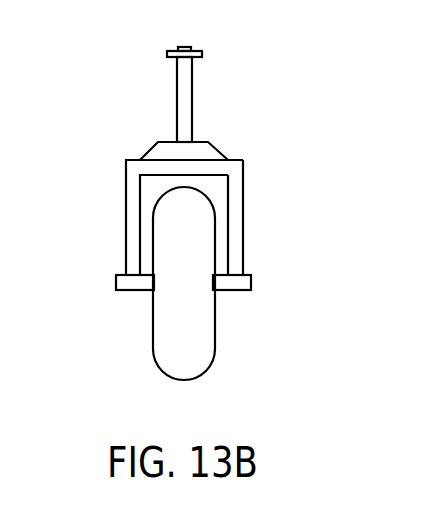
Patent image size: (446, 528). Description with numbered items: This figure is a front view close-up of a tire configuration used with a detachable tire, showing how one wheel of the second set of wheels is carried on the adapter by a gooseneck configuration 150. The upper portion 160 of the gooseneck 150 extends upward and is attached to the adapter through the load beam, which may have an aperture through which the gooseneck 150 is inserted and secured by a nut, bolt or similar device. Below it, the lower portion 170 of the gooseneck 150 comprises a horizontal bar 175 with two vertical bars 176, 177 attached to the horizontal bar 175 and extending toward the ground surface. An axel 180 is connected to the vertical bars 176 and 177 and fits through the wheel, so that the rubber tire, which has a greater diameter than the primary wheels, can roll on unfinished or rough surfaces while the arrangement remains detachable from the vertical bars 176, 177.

The gooseneck configuration 150 is at (78, 50).
The upper portion 160 is at (219, 55).
The lower portion 170 is at (298, 158).
The horizontal bar 175 is at (138, 159).
The vertical bar 176 is at (126, 234).
The vertical bar 177 is at (243, 218).
The axel 180 is at (135, 291).